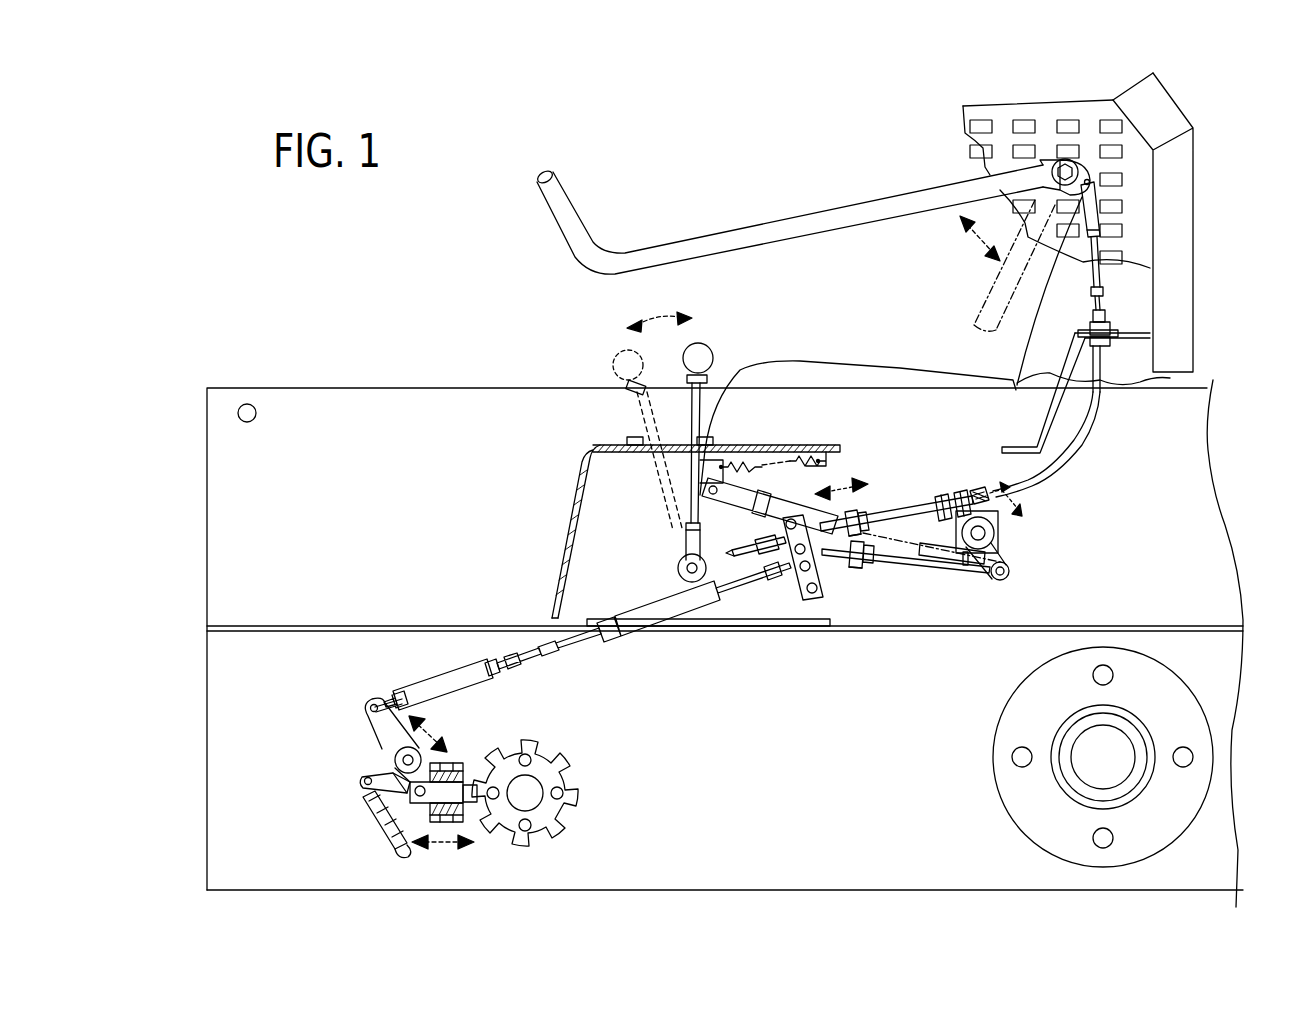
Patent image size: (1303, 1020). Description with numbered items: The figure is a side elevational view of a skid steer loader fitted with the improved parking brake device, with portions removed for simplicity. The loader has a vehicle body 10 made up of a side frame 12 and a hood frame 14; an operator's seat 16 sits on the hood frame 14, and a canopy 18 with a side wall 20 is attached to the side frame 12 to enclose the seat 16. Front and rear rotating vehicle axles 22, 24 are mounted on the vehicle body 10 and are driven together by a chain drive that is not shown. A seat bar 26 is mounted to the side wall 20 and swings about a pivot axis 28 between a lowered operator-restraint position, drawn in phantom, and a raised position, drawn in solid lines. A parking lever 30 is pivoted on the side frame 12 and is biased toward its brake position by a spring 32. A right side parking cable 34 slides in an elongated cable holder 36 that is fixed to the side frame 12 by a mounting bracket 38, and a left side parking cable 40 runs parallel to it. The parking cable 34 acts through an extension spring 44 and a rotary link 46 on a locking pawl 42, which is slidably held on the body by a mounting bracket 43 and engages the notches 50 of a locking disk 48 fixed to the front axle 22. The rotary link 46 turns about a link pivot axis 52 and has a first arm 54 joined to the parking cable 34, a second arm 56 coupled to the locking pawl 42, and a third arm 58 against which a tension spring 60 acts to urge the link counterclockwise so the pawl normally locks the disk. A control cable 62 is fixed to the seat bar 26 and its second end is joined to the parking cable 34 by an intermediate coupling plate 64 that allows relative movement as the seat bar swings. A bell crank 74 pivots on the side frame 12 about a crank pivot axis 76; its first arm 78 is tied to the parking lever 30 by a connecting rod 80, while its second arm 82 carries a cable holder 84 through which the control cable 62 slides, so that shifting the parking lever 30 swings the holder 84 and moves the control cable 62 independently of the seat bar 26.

The vehicle body 10 is at (333, 372).
The side frame 12 is at (463, 398).
The hood frame 14 is at (573, 518).
The operator's seat 16 is at (852, 367).
The canopy 18 is at (1183, 190).
The side wall 20 is at (982, 138).
The front vehicle axle 22 is at (528, 795).
The rear vehicle axle 24 is at (1083, 762).
The seat bar 26 is at (895, 207).
The pivot axis 28 is at (1063, 160).
The parking lever 30 is at (700, 352).
The spring 32 is at (738, 462).
The right side parking cable 34 is at (850, 582).
The cable holder 36 is at (672, 617).
The mounting bracket 38 is at (803, 592).
The left side parking cable 40 is at (825, 515).
The locking pawl 42 is at (455, 795).
The mounting bracket 43 is at (447, 770).
The extension spring 44 is at (400, 688).
The rotary link 46 is at (360, 746).
The locking disk 48 is at (570, 775).
The notches 50 is at (533, 745).
The link pivot axis 52 is at (395, 765).
The first arm 54 is at (380, 721).
The second arm 56 is at (371, 806).
The third arm 58 is at (365, 771).
The tension spring 60 is at (372, 787).
The control cable 62 is at (937, 497).
The intermediate coupling plate 64 is at (872, 568).
The bell crank 74 is at (1022, 550).
The crank pivot axis 76 is at (985, 535).
The first arm 78 is at (1000, 557).
The connecting rod 80 is at (958, 557).
The second arm 82 is at (918, 513).
The cable holder 84 is at (955, 497).